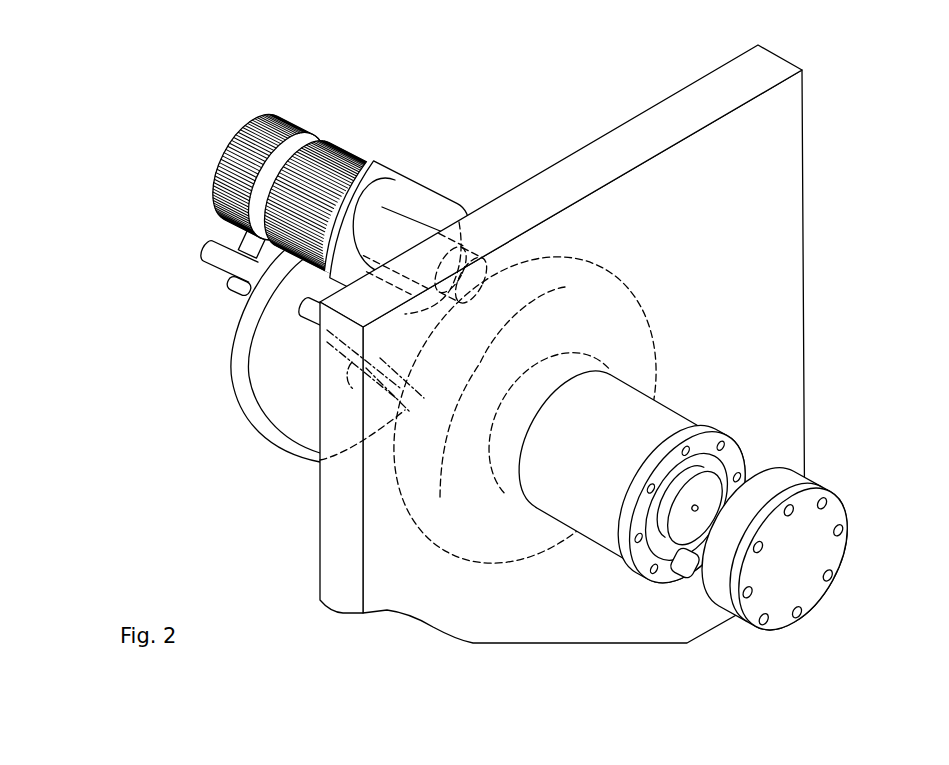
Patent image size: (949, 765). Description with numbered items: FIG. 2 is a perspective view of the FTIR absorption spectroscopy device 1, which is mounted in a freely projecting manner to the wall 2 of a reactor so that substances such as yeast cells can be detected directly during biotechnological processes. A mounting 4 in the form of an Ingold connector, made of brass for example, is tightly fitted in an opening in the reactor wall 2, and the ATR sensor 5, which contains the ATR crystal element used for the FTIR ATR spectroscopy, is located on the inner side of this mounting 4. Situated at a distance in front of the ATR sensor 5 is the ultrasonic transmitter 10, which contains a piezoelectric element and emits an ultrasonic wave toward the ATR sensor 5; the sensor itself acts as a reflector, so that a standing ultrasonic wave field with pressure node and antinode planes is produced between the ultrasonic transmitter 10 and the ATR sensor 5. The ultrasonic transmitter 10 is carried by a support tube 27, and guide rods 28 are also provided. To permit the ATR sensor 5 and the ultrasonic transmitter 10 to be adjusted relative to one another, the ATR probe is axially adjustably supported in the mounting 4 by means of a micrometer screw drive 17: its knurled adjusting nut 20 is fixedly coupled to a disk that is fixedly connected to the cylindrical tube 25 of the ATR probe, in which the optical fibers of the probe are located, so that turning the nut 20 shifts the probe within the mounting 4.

The FTIR absorption spectroscopy device 1 is at (468, 578).
The wall 2 is at (760, 165).
The mounting 4 is at (622, 422).
The ATR sensor 5 is at (690, 460).
The ultrasonic transmitter 10 is at (800, 553).
The micrometer screw drive 17 is at (358, 102).
The knurled adjusting nut 20 is at (347, 153).
The cylindrical tube 25 is at (258, 248).
The support tube 27 is at (687, 563).
The guide rods 28 is at (223, 257).